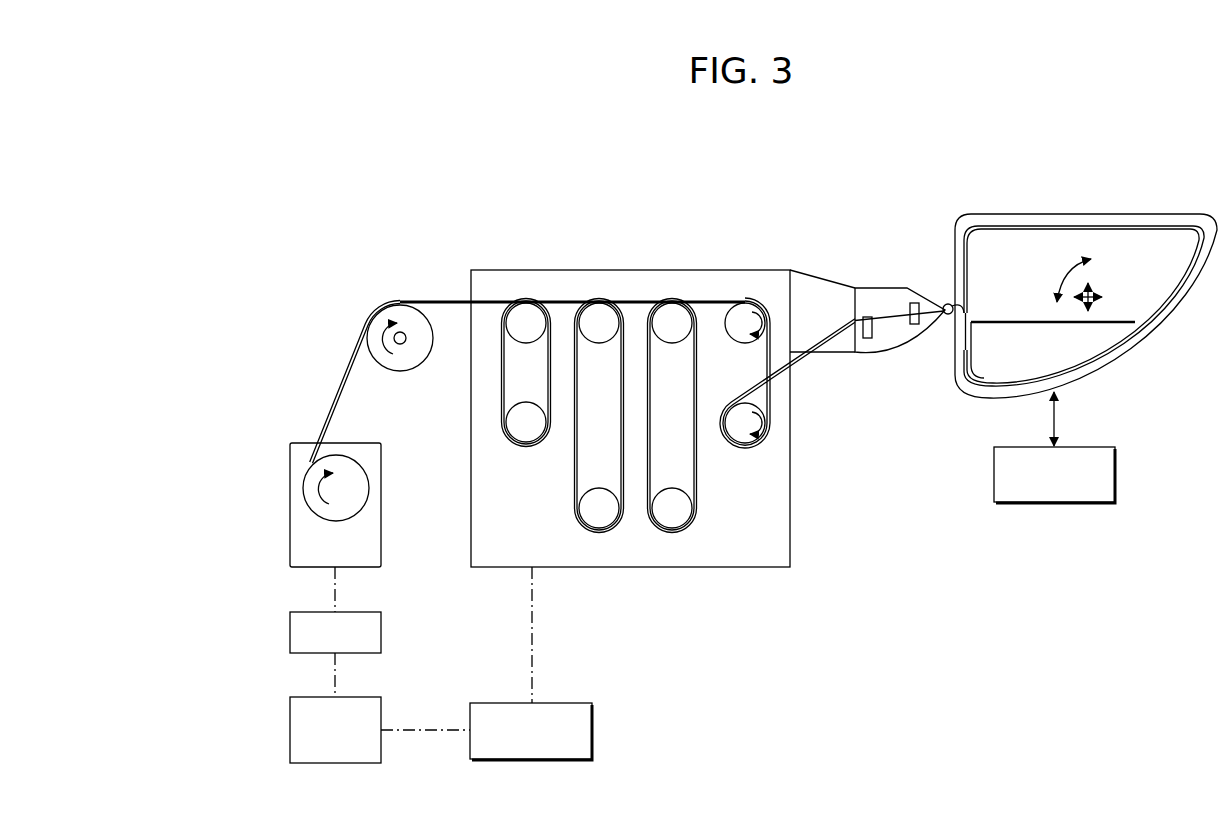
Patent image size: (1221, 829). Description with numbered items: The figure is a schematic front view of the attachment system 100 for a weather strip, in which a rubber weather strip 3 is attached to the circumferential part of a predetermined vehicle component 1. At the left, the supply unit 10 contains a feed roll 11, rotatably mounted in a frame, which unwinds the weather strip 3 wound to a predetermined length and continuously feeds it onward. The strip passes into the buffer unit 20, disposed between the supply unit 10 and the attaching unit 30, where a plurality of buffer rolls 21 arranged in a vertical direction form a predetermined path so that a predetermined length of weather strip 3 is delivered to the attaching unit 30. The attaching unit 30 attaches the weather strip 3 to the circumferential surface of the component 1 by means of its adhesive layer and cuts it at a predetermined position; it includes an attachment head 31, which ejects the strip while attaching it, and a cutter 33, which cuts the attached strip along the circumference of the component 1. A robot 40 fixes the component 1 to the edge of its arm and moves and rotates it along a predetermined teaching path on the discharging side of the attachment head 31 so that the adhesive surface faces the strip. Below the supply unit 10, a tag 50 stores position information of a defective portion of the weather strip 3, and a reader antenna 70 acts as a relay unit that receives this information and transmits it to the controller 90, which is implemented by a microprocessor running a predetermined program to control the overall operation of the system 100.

The component 1 is at (1048, 242).
The weather strip 3 is at (339, 393).
The supply unit 10 is at (296, 488).
The feed roll 11 is at (362, 488).
The buffer unit 20 is at (718, 520).
The buffer rolls 21 is at (668, 512).
The attaching unit 30 is at (890, 350).
The attachment head 31 is at (867, 316).
The cutter 33 is at (914, 302).
The robot 40 is at (1118, 475).
The tag 50 is at (290, 633).
The reader antenna 70 is at (290, 730).
The controller 90 is at (595, 731).
The attachment system 100 is at (601, 173).